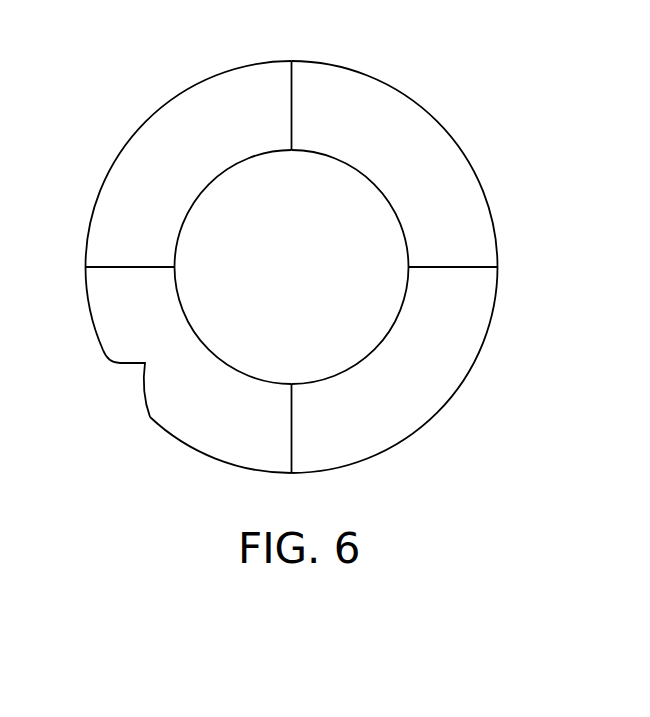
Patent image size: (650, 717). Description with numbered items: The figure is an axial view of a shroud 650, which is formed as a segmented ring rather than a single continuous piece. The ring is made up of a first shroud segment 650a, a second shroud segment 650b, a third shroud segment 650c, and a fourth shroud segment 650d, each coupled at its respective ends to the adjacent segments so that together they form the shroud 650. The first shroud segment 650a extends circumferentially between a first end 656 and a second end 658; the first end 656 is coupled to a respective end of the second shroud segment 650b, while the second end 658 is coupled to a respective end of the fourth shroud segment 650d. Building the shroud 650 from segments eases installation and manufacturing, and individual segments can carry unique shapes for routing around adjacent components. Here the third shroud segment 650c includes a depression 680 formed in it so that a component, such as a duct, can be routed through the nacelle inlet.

The shroud 650 is at (306, 242).
The first shroud segment 650a is at (395, 164).
The second shroud segment 650b is at (395, 370).
The third shroud segment 650c is at (189, 370).
The fourth shroud segment 650d is at (189, 164).
The first end 656 is at (478, 268).
The second end 658 is at (290, 82).
The depression 680 is at (145, 364).